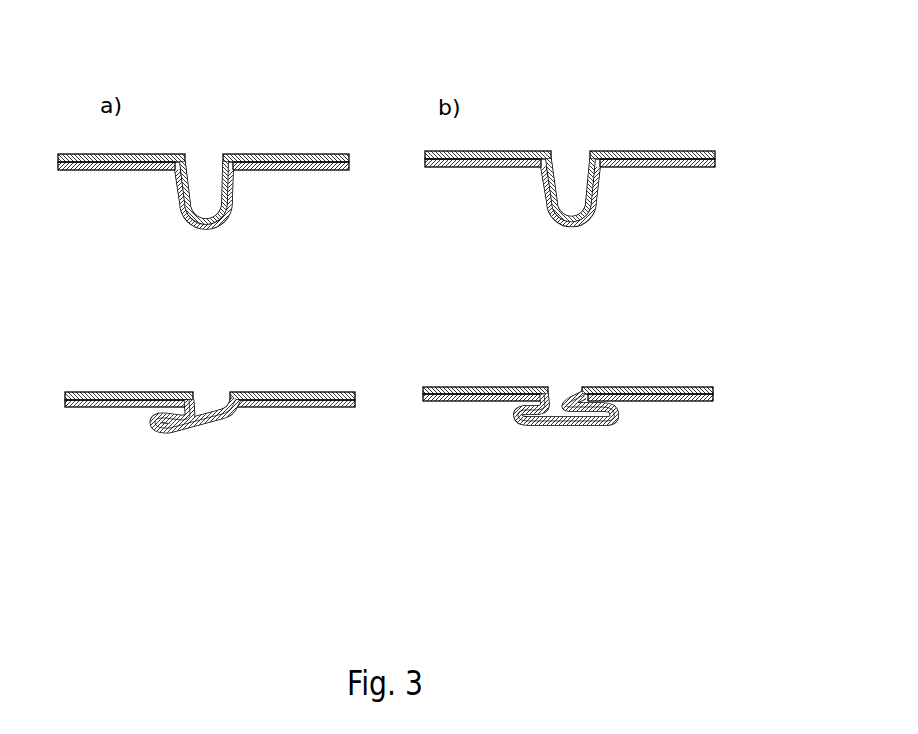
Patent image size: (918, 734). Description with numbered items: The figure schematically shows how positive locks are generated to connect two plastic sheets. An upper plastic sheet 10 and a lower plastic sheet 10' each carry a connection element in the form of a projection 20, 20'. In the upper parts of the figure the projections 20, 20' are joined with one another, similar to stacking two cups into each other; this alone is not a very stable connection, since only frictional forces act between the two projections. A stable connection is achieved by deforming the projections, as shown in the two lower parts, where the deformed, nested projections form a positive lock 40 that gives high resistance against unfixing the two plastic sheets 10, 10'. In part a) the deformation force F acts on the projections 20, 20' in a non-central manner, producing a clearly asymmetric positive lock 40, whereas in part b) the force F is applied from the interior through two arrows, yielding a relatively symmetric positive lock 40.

The upper plastic sheet 10 is at (406, 239).
The lower plastic sheet 10' is at (415, 283).
The projection 20 is at (386, 241).
The projection 20' is at (360, 248).
The positive lock 40 is at (204, 421).
The deformation force F is at (257, 218).